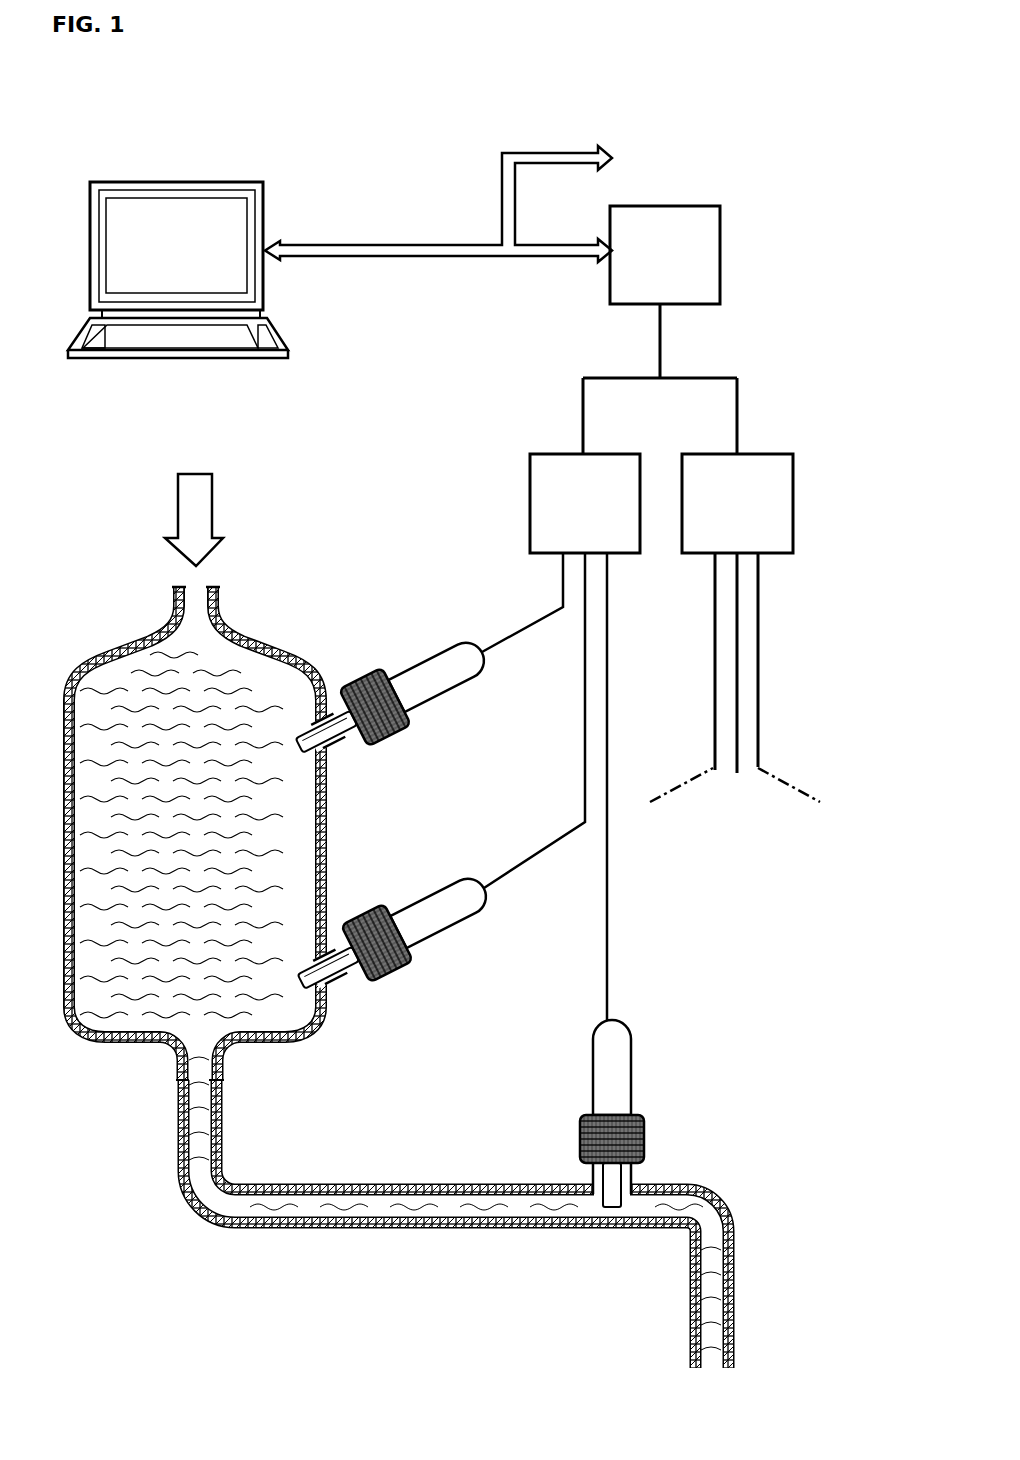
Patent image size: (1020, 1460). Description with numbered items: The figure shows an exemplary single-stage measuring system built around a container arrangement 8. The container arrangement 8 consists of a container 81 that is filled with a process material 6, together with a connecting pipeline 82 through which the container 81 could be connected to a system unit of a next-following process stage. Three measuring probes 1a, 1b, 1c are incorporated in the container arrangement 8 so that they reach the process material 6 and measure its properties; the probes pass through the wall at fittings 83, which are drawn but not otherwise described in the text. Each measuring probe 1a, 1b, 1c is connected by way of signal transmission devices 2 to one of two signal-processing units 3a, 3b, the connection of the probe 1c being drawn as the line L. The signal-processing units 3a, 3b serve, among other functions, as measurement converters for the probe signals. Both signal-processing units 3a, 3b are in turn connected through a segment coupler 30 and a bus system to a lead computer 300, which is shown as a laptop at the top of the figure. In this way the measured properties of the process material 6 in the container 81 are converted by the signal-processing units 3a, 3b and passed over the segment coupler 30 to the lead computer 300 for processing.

The lead computer 300 is at (201, 180).
The segment coupler 30 is at (660, 330).
The signal-processing unit 3a is at (585, 503).
The signal-processing unit 3b is at (737, 503).
The signal transmission devices 2 is at (650, 530).
The process material 6 is at (268, 690).
The container arrangement 8 is at (395, 977).
The container 81 is at (327, 853).
The connecting pipeline 82 is at (383, 1183).
The sensor port 83 is at (332, 986).
The measuring probe 1a is at (412, 652).
The measuring probe 1b is at (413, 885).
The measuring probe 1c is at (616, 880).
The sensor cable L is at (613, 883).